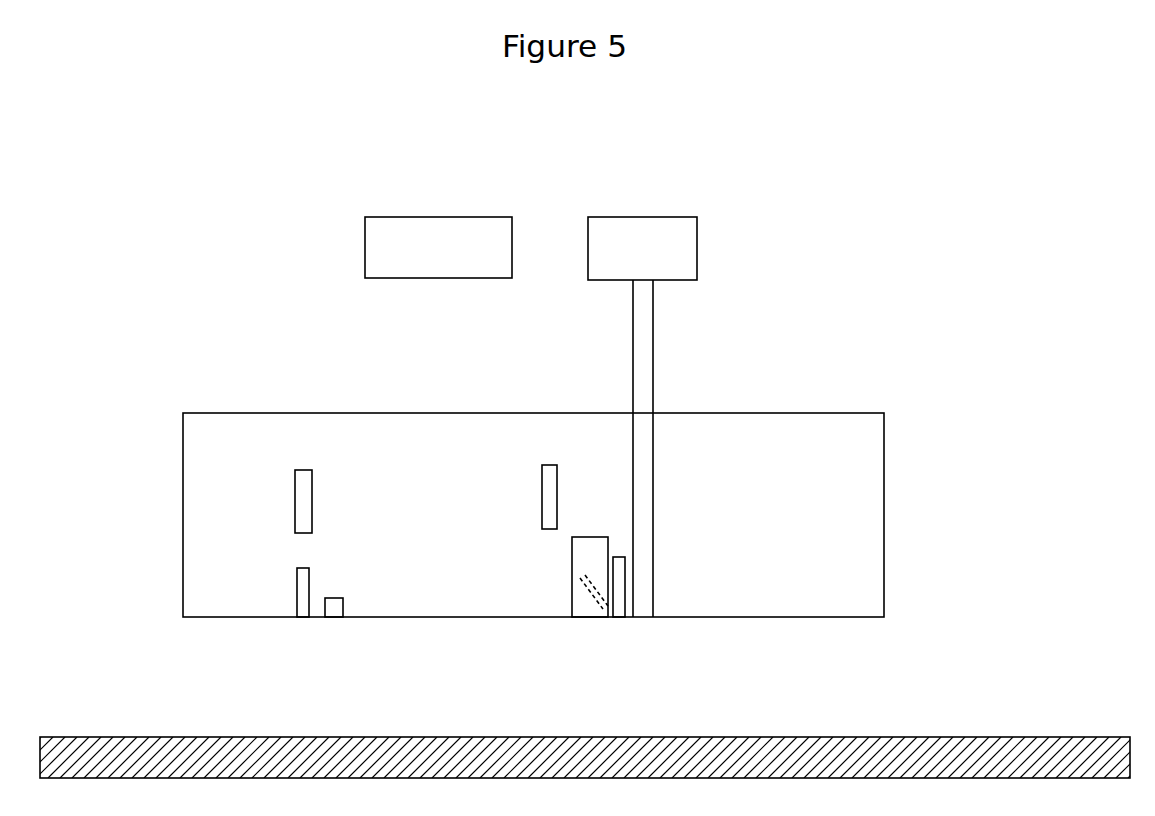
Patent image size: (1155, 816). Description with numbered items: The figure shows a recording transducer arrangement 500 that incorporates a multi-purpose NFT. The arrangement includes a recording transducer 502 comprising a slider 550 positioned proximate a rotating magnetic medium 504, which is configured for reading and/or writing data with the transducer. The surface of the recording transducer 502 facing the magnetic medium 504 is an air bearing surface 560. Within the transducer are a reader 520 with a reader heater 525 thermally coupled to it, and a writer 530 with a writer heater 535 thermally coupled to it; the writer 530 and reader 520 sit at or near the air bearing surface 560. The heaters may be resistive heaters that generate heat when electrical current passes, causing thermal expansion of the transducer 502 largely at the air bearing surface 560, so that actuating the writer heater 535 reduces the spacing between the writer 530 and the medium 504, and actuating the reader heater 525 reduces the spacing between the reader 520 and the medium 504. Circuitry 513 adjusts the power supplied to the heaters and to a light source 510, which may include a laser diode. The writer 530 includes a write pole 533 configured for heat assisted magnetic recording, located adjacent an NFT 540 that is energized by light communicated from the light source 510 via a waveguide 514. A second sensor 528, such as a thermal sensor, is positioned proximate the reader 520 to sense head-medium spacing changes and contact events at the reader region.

The recording transducer arrangement 500 is at (250, 122).
The recording transducer 502 is at (884, 470).
The magnetic medium 504 is at (1081, 737).
The light source 510 is at (697, 240).
The circuitry 513 is at (365, 246).
The waveguide 514 is at (653, 352).
The reader 520 is at (297, 598).
The reader heater 525 is at (312, 500).
The second sensor 528 is at (343, 610).
The writer 530 is at (572, 558).
The write pole 533 is at (592, 603).
The writer heater 535 is at (538, 500).
The NFT 540 is at (618, 557).
The slider 550 is at (242, 640).
The air bearing surface 560 is at (706, 638).